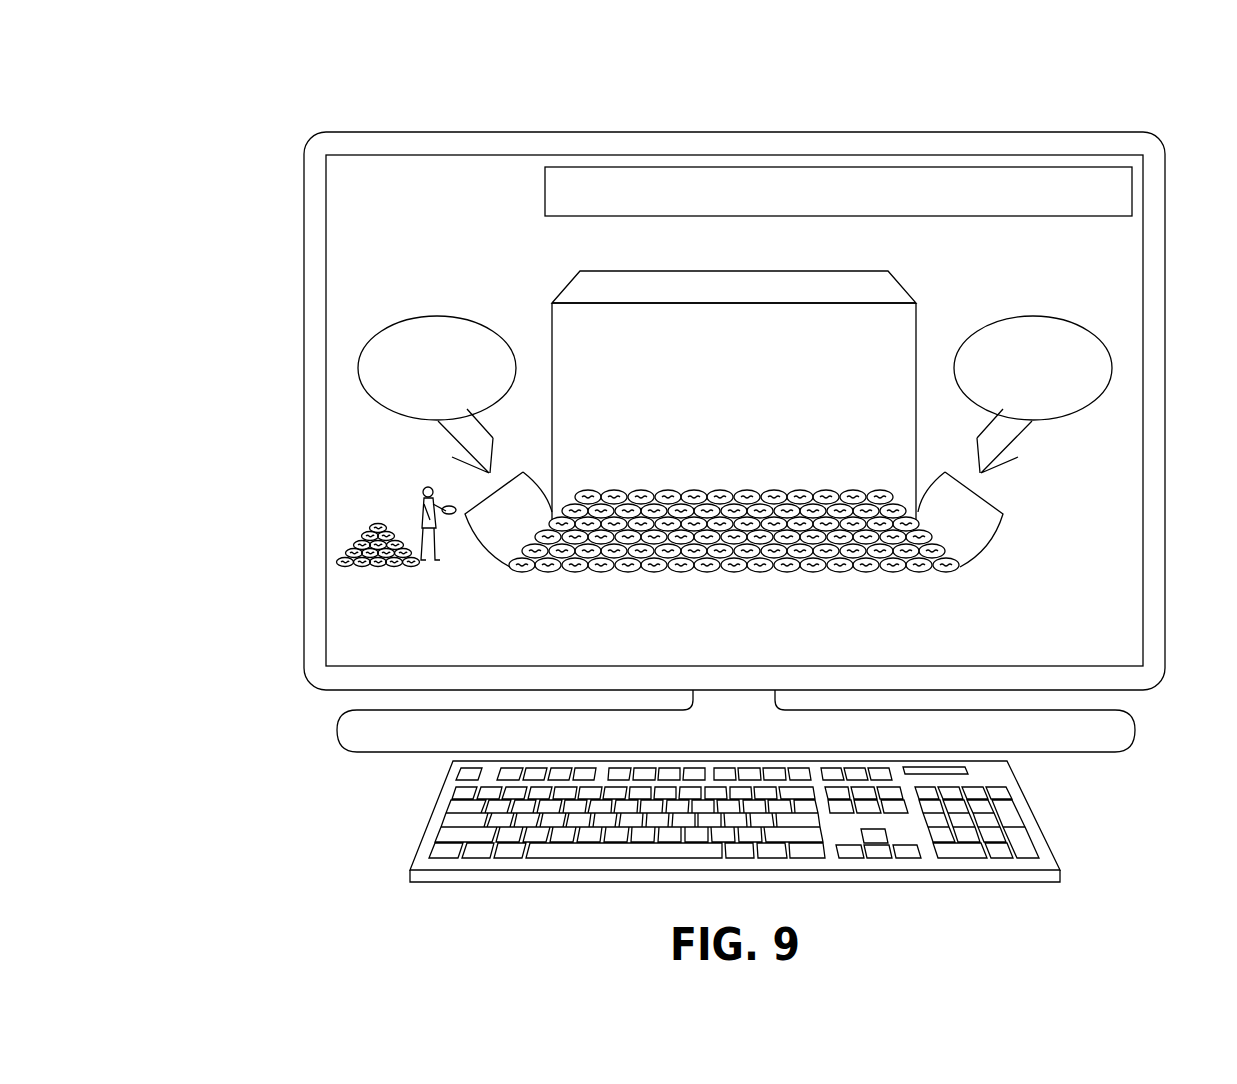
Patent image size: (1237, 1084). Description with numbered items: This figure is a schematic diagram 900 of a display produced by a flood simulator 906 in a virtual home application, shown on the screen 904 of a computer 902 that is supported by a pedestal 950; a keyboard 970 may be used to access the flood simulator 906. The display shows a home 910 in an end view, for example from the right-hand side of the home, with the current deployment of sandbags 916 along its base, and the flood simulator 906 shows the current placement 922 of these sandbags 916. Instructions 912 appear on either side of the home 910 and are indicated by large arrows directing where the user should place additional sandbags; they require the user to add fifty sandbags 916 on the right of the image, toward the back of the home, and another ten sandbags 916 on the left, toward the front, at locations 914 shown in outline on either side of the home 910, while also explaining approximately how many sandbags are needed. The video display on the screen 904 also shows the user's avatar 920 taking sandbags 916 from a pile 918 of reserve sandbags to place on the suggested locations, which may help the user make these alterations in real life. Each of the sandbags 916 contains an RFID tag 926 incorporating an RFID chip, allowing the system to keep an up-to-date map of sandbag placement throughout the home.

The schematic diagram 900 is at (242, 99).
The computer 902 is at (843, 131).
The screen 904 is at (433, 172).
The flood simulator 906 is at (1092, 167).
The home 910 is at (919, 318).
The instructions 912 is at (1090, 326).
The locations 914 is at (1003, 520).
The sandbags 916 is at (704, 573).
The pile 918 is at (365, 527).
The avatar 920 is at (422, 500).
The current placement 922 is at (812, 574).
The RFID tag 926 is at (602, 570).
The pedestal 950 is at (1137, 735).
The keyboard 970 is at (1035, 820).